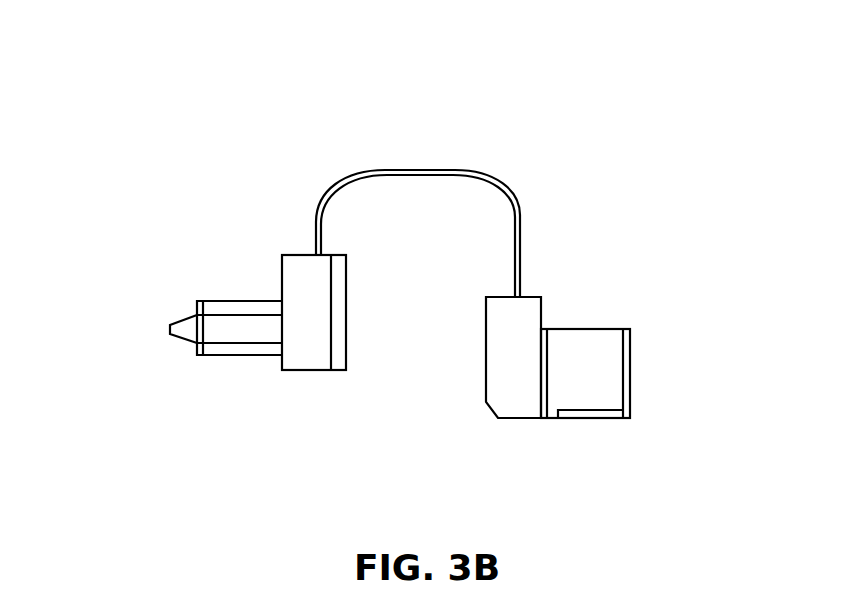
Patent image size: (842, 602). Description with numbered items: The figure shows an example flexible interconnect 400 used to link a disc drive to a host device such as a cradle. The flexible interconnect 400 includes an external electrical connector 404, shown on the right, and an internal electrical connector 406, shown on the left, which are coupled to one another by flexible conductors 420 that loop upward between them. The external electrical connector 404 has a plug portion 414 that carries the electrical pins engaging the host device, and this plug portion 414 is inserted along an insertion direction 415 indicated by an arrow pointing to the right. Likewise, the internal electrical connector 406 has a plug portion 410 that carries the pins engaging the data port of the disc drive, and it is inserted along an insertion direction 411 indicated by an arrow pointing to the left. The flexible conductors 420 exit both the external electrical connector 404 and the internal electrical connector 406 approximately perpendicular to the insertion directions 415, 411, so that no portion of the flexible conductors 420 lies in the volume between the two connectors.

The flexible interconnect 400 is at (147, 132).
The external electrical connector 404 is at (525, 388).
The internal electrical connector 406 is at (307, 309).
The plug portion 410 is at (213, 350).
The insertion direction 411 is at (168, 330).
The plug portion 414 is at (600, 415).
The insertion direction 415 is at (634, 373).
The flexible conductors 420 is at (413, 173).